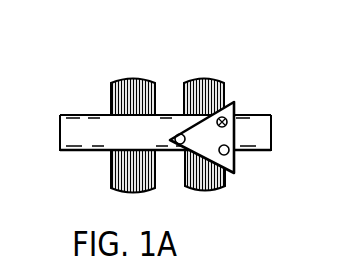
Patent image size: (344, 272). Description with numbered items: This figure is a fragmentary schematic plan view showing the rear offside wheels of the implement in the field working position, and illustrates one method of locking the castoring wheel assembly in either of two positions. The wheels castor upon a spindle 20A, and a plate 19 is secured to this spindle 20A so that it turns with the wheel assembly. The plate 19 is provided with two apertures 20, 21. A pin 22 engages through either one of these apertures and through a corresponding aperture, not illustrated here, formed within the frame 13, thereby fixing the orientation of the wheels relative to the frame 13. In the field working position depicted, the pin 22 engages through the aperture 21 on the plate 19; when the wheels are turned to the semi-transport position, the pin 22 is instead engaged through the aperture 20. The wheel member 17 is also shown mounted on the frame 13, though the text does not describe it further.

The frame 13 is at (68, 117).
The cylindrical sleeve 17 is at (119, 62).
The plate 19 is at (234, 102).
The aperture 20 is at (236, 172).
The spindle 20A is at (178, 144).
The aperture 21 is at (238, 115).
The pin 22 is at (187, 188).